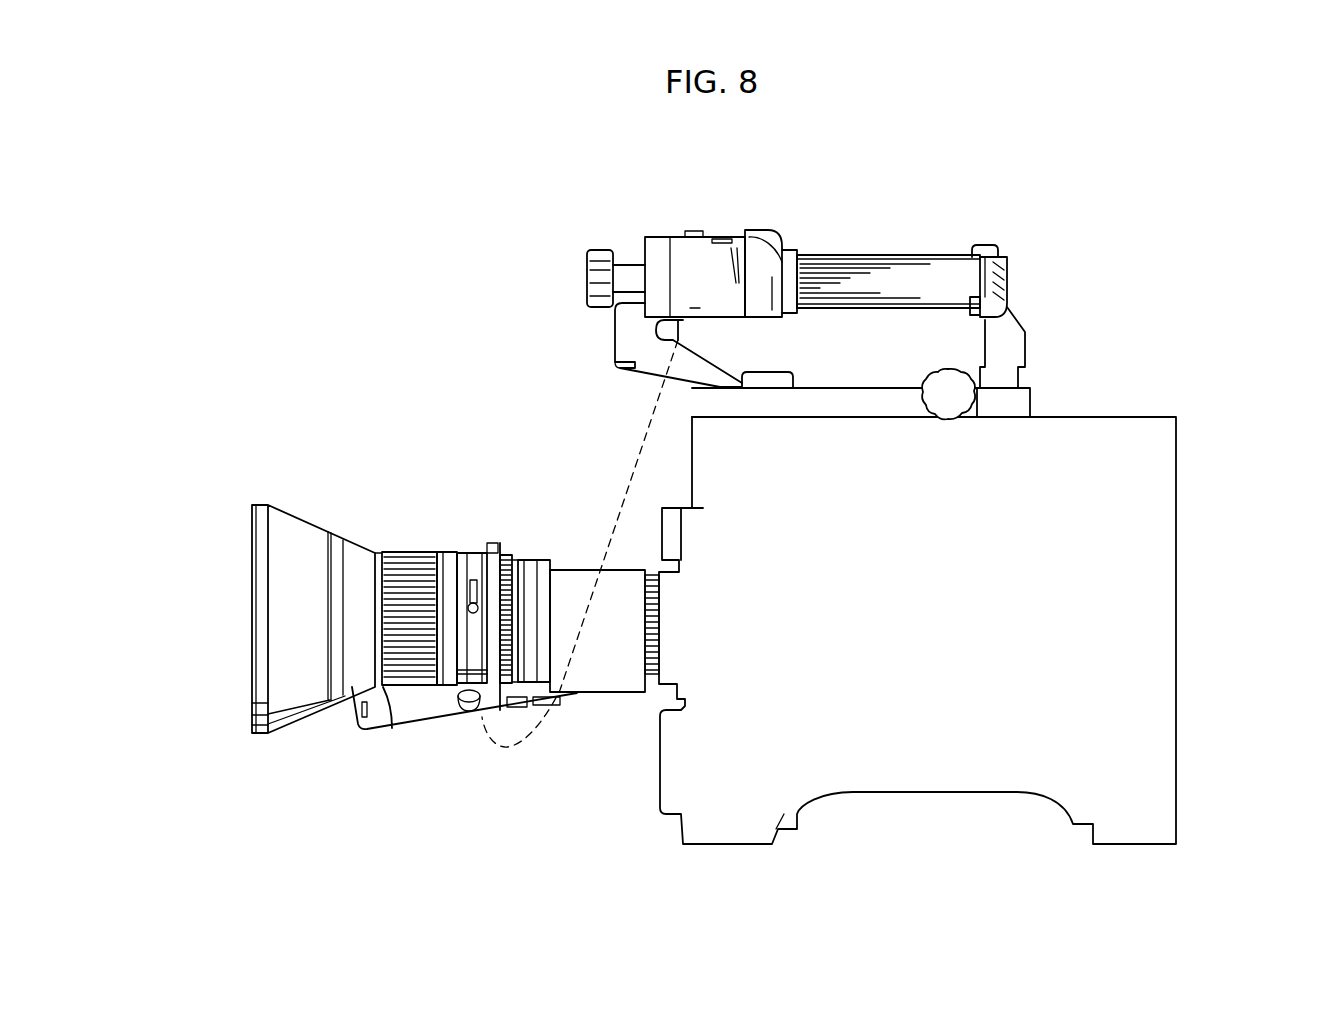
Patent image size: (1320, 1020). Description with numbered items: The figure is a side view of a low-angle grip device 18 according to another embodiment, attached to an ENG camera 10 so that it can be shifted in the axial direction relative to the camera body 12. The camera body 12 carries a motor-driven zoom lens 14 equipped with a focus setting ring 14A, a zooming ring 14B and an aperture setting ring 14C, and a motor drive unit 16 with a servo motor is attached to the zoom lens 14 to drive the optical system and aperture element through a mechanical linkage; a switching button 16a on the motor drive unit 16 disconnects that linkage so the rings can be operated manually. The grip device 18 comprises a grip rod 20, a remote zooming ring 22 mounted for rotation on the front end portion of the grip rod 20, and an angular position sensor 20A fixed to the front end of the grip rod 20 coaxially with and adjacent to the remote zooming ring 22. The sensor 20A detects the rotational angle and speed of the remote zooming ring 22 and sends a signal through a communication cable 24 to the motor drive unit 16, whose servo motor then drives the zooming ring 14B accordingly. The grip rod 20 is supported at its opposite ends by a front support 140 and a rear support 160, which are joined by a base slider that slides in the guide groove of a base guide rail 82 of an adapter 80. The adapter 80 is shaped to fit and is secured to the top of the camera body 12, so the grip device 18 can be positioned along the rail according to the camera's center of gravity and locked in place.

The ENG camera 10 is at (540, 427).
The camera body 12 is at (1157, 598).
The zoom lens 14 is at (363, 553).
The focus setting ring 14A is at (447, 552).
The zooming ring 14B is at (507, 552).
The aperture setting ring 14C is at (543, 558).
The motor drive unit 16 is at (400, 730).
The switching button 16a is at (463, 710).
The low-angle grip device 18 is at (840, 248).
The grip rod 20 is at (908, 255).
The angular position sensor 20A is at (677, 247).
The remote zooming ring 22 is at (757, 228).
The communication cable 24 is at (687, 332).
The adapter 80 is at (1034, 398).
The base guide rail 82 is at (844, 407).
The front support 140 is at (615, 345).
The rear support 160 is at (1022, 325).